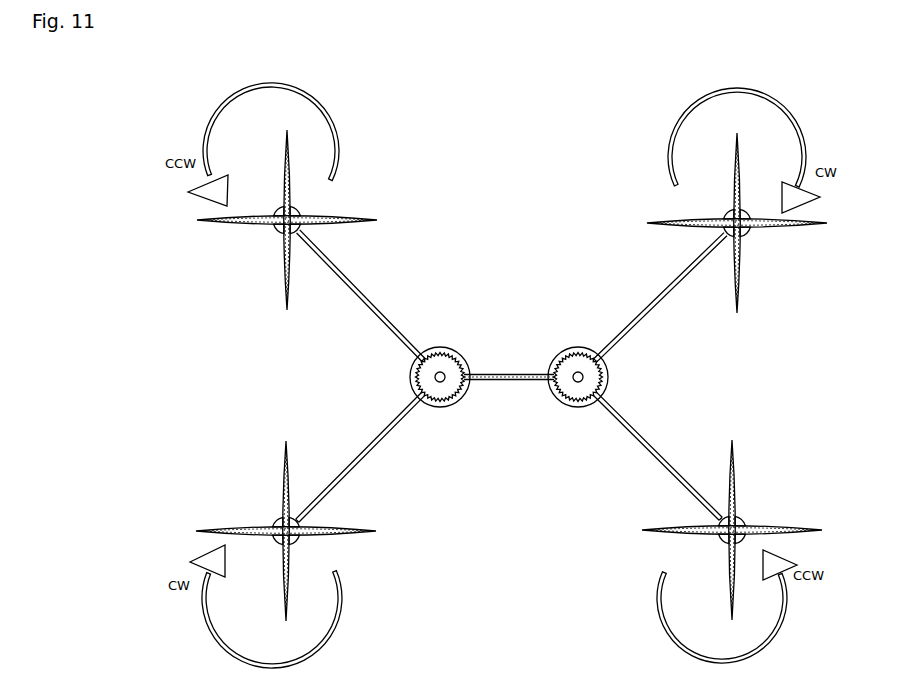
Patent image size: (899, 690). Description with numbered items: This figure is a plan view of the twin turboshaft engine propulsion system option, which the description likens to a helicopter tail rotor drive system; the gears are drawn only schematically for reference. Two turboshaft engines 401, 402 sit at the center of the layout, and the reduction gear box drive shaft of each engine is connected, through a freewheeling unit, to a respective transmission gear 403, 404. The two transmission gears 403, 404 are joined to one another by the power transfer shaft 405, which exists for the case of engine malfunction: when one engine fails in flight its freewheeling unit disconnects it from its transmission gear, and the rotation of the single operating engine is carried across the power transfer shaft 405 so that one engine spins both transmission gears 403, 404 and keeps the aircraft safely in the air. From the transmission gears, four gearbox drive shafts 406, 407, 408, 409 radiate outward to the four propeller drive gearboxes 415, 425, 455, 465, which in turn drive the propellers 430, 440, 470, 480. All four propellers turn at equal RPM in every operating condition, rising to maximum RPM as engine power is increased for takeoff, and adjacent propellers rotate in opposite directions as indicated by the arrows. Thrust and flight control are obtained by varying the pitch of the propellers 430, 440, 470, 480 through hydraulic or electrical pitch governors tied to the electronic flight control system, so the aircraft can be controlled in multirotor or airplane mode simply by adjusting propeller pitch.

The turboshaft engine 401 is at (436, 346).
The turboshaft engine 402 is at (575, 346).
The transmission gear 403 is at (442, 400).
The transmission gear 404 is at (576, 400).
The power transfer shaft 405 is at (527, 381).
The gearbox drive shaft 406 is at (346, 287).
The gearbox drive shaft 407 is at (662, 300).
The gearbox drive shaft 408 is at (373, 452).
The gearbox drive shaft 409 is at (657, 455).
The propeller drive gearbox 415 is at (277, 237).
The propeller 430 is at (270, 217).
The propeller drive gearbox 455 is at (750, 233).
The propeller 470 is at (745, 215).
The propeller drive gearbox 425 is at (272, 523).
The propeller 440 is at (284, 547).
The propeller drive gearbox 465 is at (745, 518).
The propeller 480 is at (733, 550).